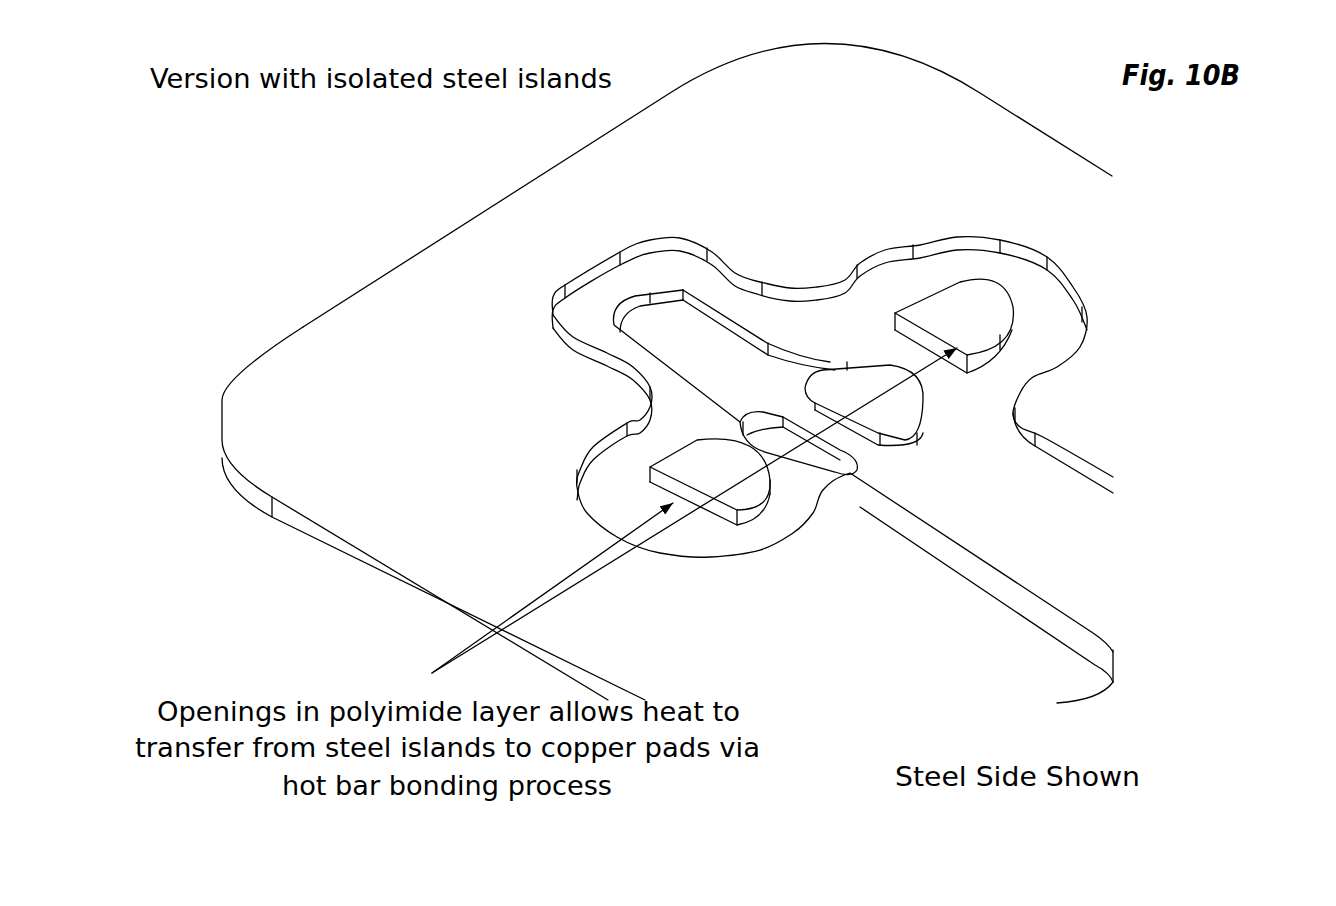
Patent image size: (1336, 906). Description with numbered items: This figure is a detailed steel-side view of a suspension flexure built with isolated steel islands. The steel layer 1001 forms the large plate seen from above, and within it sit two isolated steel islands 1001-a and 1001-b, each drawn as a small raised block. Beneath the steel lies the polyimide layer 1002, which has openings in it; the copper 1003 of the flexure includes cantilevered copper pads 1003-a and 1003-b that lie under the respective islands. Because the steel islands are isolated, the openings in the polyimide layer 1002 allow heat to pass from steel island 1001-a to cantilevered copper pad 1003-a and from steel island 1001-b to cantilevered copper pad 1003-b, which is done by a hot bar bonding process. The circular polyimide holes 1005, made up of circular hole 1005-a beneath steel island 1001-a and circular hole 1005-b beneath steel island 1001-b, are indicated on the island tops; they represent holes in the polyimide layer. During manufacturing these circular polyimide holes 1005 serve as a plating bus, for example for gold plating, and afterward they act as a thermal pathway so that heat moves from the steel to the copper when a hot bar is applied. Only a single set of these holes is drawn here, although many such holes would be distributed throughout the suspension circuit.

The steel layer 1001 is at (697, 453).
The isolated steel island 1001-a is at (935, 320).
The isolated steel island 1001-b is at (687, 477).
The polyimide layer 1002 is at (902, 498).
The copper 1003 is at (900, 403).
The cantilevered copper pad 1003-a is at (892, 412).
The cantilevered copper pad 1003-b is at (818, 460).
The circular polyimide holes 1005 is at (958, 336).
The circular hole 1005-a is at (958, 330).
The circular hole 1005-b is at (695, 497).